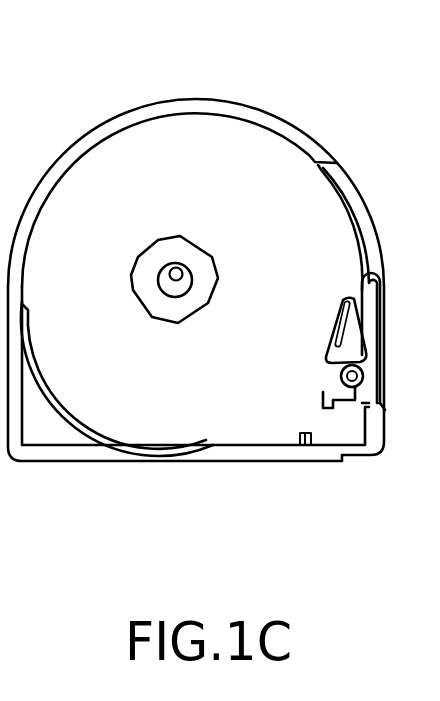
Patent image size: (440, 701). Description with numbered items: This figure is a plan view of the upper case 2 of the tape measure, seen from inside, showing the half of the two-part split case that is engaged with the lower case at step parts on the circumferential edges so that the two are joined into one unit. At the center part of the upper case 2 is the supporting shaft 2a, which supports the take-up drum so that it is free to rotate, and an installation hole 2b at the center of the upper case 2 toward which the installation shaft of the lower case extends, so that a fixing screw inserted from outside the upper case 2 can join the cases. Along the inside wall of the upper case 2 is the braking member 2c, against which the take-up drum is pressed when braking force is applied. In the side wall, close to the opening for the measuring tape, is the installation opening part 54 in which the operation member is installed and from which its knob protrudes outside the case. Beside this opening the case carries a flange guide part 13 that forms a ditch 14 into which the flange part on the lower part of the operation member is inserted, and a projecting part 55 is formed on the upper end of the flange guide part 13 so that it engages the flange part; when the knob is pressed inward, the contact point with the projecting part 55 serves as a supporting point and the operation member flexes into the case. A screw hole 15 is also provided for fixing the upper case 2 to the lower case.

The upper case 2 is at (227, 104).
The supporting shaft 2a is at (152, 322).
The installation hole 2b is at (188, 283).
The braking member 2c is at (92, 422).
The installation opening part 54 is at (362, 207).
The projecting part 55 is at (348, 300).
The flange guide part 13 is at (337, 341).
The ditch 14 is at (352, 338).
The screw hole 15 is at (343, 375).